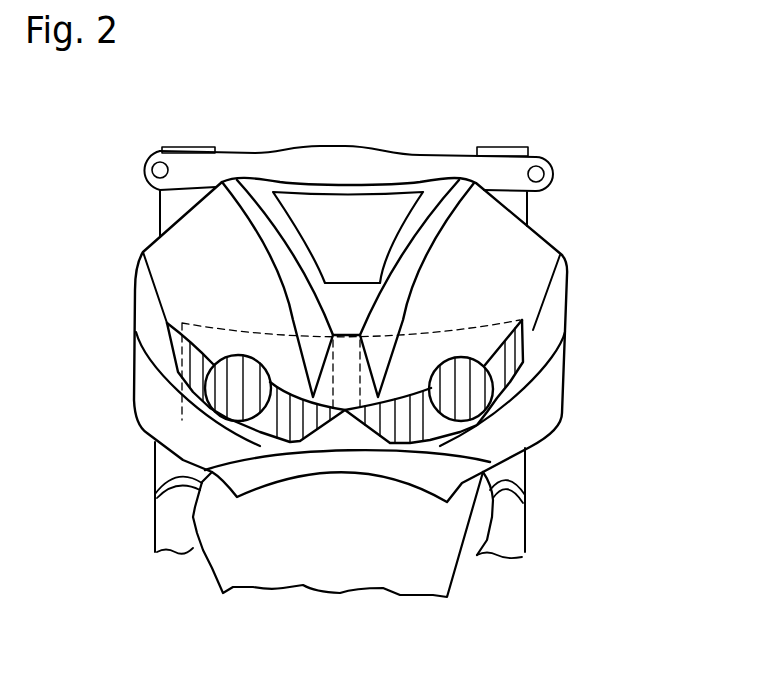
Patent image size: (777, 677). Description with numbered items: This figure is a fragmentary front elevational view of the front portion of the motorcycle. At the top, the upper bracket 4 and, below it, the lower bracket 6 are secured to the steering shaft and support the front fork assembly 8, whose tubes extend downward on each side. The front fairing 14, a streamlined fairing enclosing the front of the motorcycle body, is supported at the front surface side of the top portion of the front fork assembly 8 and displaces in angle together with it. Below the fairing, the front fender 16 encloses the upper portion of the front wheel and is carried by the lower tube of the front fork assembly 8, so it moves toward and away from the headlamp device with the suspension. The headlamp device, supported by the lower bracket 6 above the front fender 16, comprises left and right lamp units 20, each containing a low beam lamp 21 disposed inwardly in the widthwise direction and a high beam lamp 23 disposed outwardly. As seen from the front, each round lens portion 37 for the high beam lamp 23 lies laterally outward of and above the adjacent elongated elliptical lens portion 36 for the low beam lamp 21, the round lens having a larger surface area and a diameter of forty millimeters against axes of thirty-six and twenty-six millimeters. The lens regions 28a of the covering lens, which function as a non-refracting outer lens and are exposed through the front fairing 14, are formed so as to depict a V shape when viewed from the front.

The upper bracket 4 is at (140, 165).
The front fork assembly 8 is at (170, 207).
The lower bracket 6 is at (160, 472).
The front fairing 14 is at (562, 254).
The front fender 16 is at (223, 557).
The lamp unit 20 is at (183, 376).
The low beam lamp 21 is at (339, 453).
The high beam lamp 23 is at (341, 381).
The lens portion for the low beam lamp 36 is at (585, 463).
The lens portion for the high beam lamp 37 is at (585, 413).
The lens region 28a is at (290, 425).